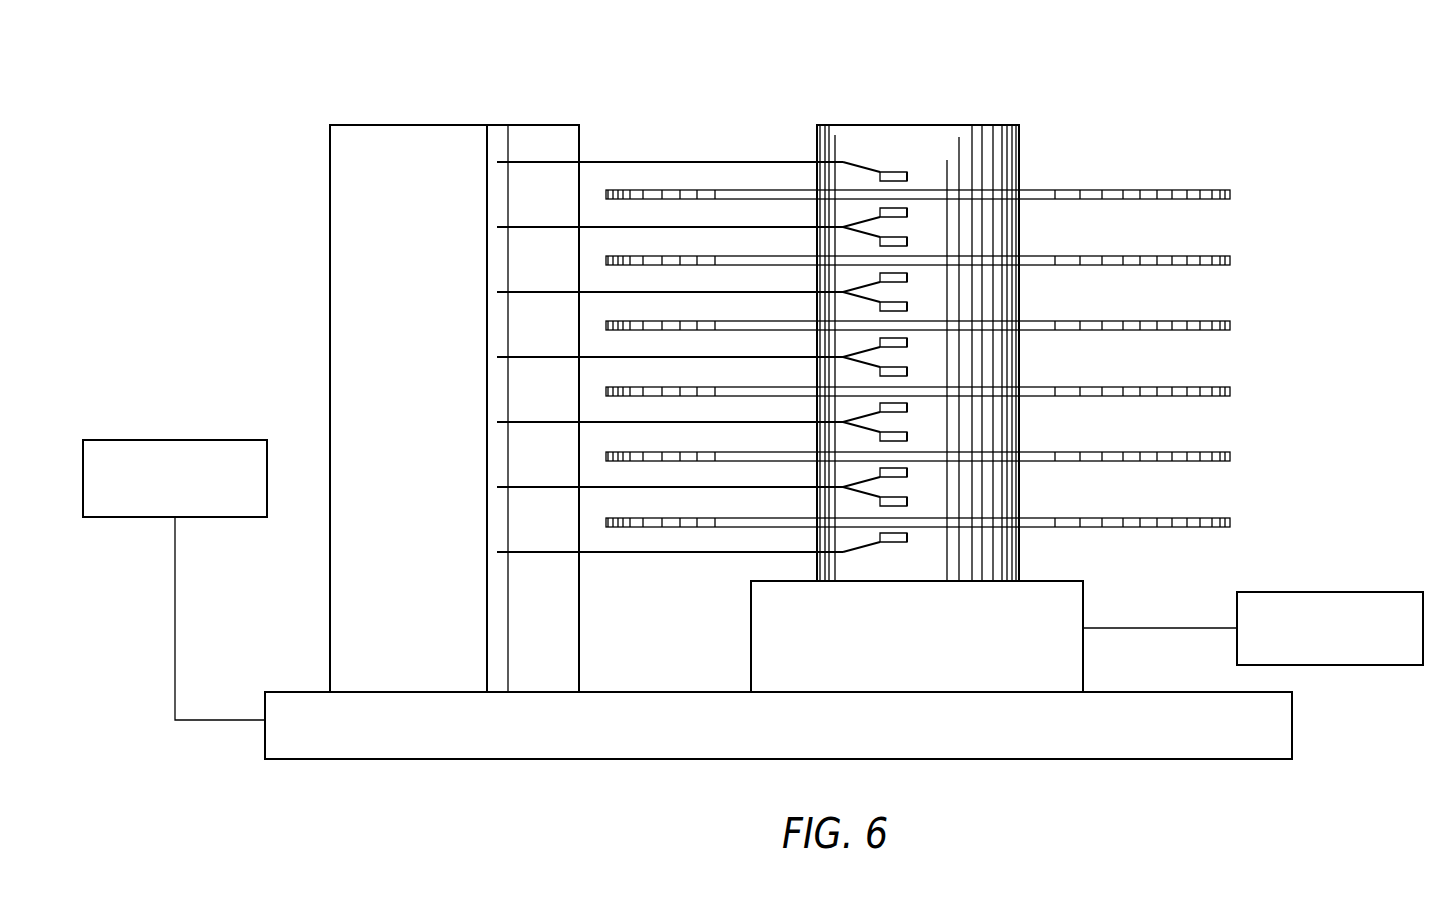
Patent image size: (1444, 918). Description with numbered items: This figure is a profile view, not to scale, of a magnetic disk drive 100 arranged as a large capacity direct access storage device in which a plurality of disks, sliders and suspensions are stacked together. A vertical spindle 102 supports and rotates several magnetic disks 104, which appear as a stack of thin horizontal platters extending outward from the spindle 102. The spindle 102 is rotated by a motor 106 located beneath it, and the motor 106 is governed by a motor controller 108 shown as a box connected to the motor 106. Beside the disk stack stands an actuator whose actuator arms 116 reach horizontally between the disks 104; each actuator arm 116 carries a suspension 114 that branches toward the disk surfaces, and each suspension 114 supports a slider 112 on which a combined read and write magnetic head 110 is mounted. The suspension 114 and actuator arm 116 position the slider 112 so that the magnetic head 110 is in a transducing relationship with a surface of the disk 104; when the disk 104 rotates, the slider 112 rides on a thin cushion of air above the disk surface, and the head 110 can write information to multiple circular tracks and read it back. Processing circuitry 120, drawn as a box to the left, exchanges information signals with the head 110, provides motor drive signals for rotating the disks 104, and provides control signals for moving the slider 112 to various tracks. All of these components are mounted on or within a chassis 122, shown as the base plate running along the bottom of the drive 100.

The magnetic disk drive 100 is at (1158, 102).
The spindle 102 is at (1020, 160).
The magnetic disk 104 is at (1230, 199).
The motor 106 is at (940, 647).
The motor controller 108 is at (1392, 590).
The magnetic head 110 is at (908, 210).
The slider 112 is at (890, 210).
The suspension 114 is at (862, 217).
The actuator arm 116 is at (746, 225).
The processing circuitry 120 is at (105, 438).
The chassis 122 is at (403, 760).